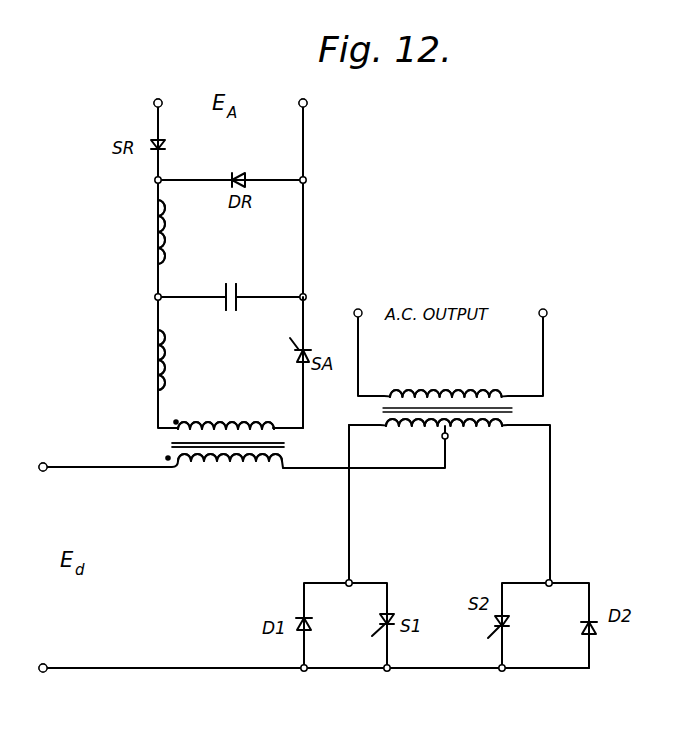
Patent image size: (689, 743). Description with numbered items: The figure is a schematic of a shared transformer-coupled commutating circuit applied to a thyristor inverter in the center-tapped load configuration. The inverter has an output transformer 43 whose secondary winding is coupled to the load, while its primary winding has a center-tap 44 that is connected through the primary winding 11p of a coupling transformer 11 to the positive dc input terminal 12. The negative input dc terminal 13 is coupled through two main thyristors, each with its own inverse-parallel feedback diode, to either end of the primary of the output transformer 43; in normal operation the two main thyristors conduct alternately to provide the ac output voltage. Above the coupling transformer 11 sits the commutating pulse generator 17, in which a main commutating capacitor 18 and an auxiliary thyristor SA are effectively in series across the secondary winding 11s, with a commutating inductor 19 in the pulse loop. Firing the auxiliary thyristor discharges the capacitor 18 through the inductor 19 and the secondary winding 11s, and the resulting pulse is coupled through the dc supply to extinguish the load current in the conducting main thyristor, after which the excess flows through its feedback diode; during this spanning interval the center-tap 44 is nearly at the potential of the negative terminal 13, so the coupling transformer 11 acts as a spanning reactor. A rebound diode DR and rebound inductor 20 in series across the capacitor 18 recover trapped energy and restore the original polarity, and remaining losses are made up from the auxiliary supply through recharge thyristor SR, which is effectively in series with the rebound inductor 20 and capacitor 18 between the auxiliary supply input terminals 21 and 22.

The coupling transformer 11 is at (156, 449).
The secondary winding 11s is at (226, 428).
The primary winding 11p is at (223, 470).
The positive dc input terminal 12 is at (43, 462).
The negative input dc terminal 13 is at (41, 675).
The commutating pulse generator 17 is at (320, 281).
The main commutating capacitor 18 is at (227, 286).
The commutating inductor 19 is at (151, 353).
The rebound inductor 20 is at (152, 236).
The auxiliary supply input terminal 21 is at (154, 103).
The auxiliary supply input terminal 22 is at (308, 101).
The output transformer 43 is at (532, 409).
The center-tap 44 is at (449, 441).